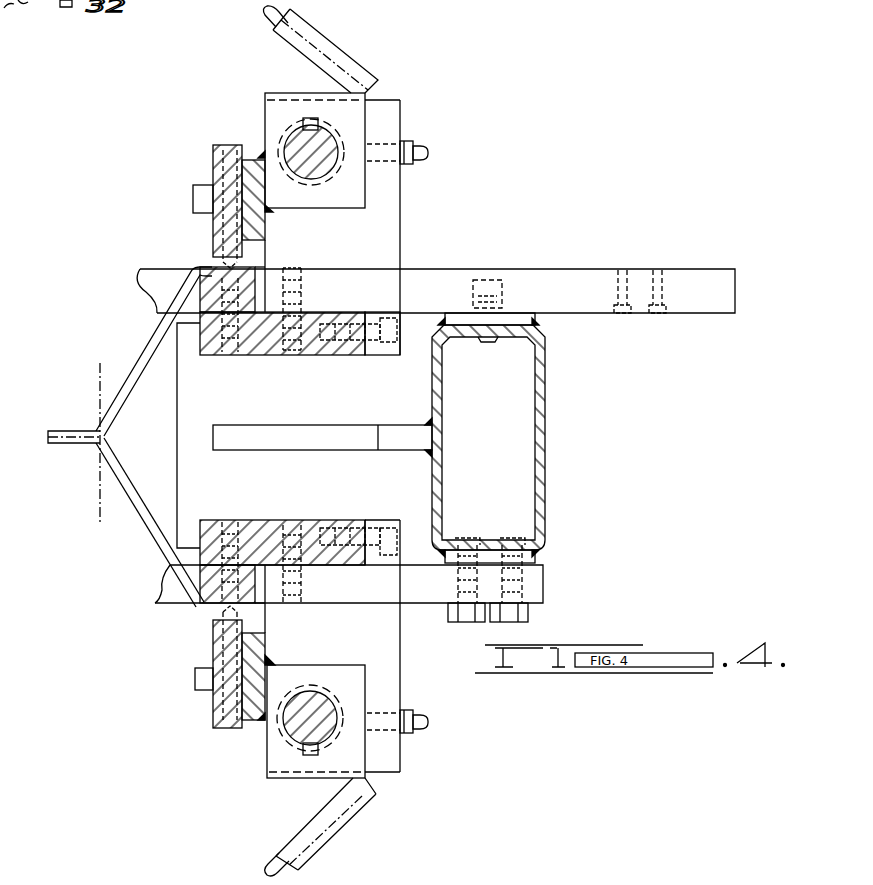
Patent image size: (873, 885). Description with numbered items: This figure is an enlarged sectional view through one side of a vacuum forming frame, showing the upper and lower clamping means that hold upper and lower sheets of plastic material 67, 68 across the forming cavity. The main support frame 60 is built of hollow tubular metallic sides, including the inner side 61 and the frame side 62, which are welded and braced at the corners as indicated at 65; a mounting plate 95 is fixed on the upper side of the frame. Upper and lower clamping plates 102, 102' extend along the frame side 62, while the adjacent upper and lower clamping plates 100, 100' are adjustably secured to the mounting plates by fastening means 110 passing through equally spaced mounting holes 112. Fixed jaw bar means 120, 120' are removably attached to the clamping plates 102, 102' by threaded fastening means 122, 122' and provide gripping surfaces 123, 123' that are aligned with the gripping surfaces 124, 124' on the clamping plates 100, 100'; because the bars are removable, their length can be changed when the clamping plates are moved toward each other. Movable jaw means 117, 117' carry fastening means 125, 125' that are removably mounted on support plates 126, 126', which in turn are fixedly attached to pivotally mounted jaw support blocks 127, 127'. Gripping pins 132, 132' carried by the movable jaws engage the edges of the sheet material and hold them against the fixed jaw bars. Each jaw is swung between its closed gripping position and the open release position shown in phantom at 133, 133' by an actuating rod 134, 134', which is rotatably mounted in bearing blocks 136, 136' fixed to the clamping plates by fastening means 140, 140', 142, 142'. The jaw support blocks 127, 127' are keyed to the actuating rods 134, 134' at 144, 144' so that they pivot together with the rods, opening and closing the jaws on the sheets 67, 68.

The main support frame 60 is at (548, 543).
The inner side of support frame 61 is at (185, 423).
The frame side 62 is at (547, 432).
The corner brace 65 is at (257, 440).
The upper sheet of plastic material 67 is at (157, 335).
The lower sheet of plastic material 68 is at (140, 520).
The mounting plate 95 is at (540, 321).
The upper clamping plate 100 is at (446, 264).
The lower clamping plate 100' is at (349, 616).
The upper clamping plate 102 is at (300, 363).
The lower clamping plate 102' is at (300, 515).
The fastening means 110 is at (495, 268).
The mounting holes 112 is at (660, 283).
The movable jaw means 117 is at (181, 191).
The lower movable jaw means 117' is at (184, 692).
The fixed jaw bar means 120 is at (161, 289).
The lower fixed jaw bar means 120' is at (181, 613).
The threaded fastening means 122 is at (214, 341).
The threaded fastening means 122' is at (297, 565).
The gripping surface 123 is at (279, 267).
The gripping surface 123' is at (197, 627).
The gripping surface 124 is at (106, 271).
The gripping surface 124' is at (129, 587).
The fastening means 125 is at (160, 192).
The fastening means 125' is at (162, 699).
The support plate 126 is at (234, 166).
The support plate 126' is at (227, 711).
The jaw support block 127 is at (343, 170).
The jaw support block 127' is at (372, 716).
The gripping pin 132 is at (182, 209).
The gripping pin 132' is at (285, 663).
The open release position 133 is at (354, 49).
The open release position 133' is at (331, 827).
The actuating rod 134 is at (377, 133).
The actuating rod 134' is at (332, 688).
The bearing block 136 is at (421, 227).
The bearing block 136' is at (421, 646).
The fastening means 140 is at (316, 333).
The fastening means 140' is at (315, 537).
The fastening means 142 is at (363, 359).
The fastening means 142' is at (363, 513).
The key 144 is at (279, 90).
The key 144' is at (279, 784).